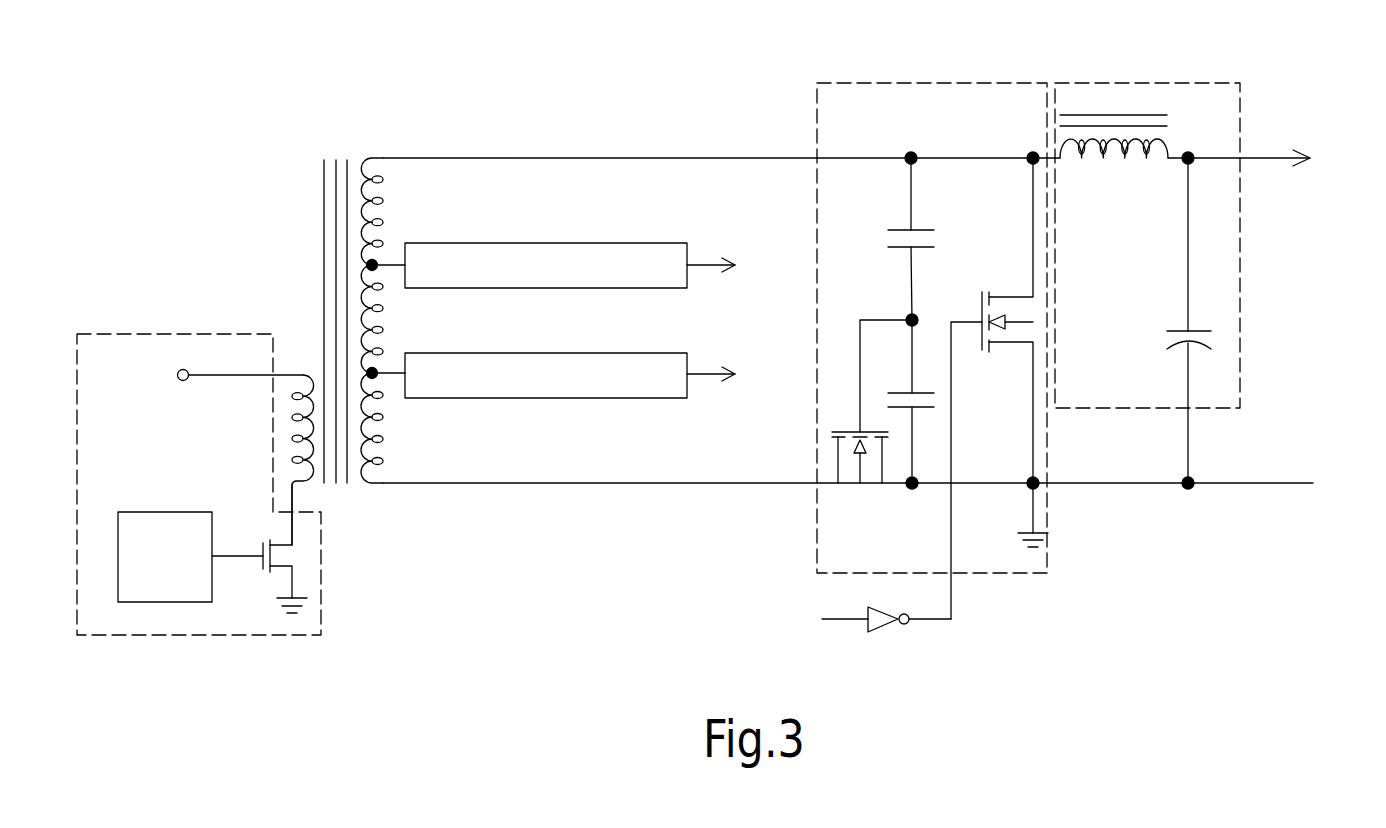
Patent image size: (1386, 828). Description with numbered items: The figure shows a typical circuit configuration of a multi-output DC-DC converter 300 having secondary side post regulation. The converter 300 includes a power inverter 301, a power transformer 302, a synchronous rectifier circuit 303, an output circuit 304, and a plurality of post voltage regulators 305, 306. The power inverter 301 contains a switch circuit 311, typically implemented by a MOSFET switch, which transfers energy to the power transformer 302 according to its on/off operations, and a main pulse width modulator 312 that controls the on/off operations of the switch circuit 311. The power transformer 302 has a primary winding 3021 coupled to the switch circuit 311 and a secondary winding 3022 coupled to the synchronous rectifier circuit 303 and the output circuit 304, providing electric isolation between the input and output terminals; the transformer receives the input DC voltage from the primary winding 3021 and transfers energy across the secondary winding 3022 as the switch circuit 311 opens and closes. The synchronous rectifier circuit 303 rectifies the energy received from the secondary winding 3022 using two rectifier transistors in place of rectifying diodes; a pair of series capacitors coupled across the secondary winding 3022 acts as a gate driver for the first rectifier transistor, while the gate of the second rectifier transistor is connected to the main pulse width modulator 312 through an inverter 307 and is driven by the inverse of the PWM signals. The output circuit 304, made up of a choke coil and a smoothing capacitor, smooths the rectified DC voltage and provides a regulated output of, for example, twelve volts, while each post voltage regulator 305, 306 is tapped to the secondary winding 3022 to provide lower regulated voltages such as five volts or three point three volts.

The multi-output DC-DC converter 300 is at (317, 65).
The power inverter 301 is at (199, 458).
The power transformer 302 is at (363, 322).
The primary winding 3021 is at (303, 375).
The secondary winding 3022 is at (378, 198).
The synchronous rectifier circuit 303 is at (972, 90).
The output circuit 304 is at (1150, 92).
The post voltage regulator 305 is at (660, 250).
The post voltage regulator 306 is at (652, 362).
The inverter 307 is at (880, 620).
The switch circuit 311 is at (260, 553).
The main pulse width modulator 312 is at (160, 517).